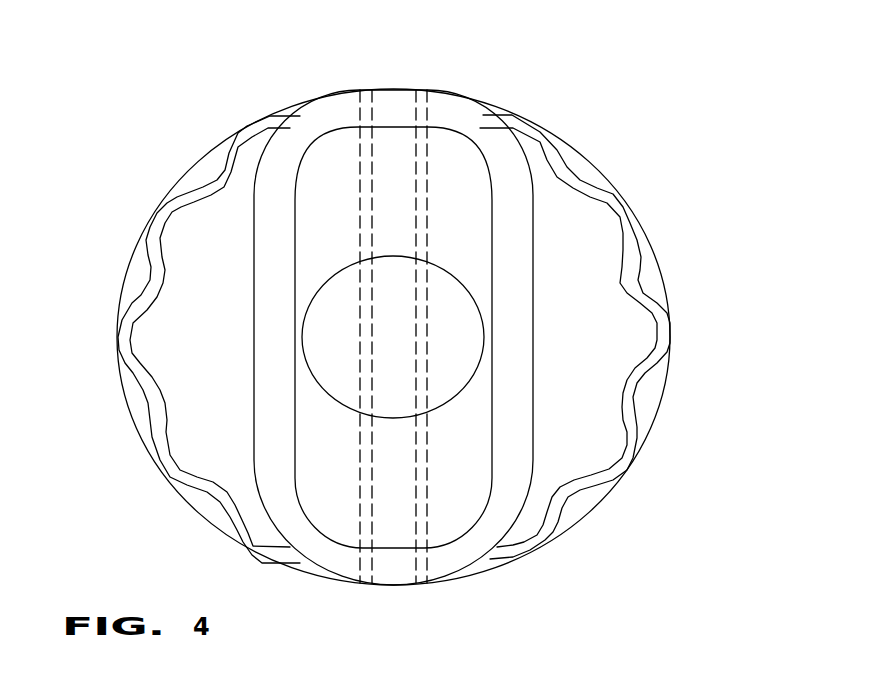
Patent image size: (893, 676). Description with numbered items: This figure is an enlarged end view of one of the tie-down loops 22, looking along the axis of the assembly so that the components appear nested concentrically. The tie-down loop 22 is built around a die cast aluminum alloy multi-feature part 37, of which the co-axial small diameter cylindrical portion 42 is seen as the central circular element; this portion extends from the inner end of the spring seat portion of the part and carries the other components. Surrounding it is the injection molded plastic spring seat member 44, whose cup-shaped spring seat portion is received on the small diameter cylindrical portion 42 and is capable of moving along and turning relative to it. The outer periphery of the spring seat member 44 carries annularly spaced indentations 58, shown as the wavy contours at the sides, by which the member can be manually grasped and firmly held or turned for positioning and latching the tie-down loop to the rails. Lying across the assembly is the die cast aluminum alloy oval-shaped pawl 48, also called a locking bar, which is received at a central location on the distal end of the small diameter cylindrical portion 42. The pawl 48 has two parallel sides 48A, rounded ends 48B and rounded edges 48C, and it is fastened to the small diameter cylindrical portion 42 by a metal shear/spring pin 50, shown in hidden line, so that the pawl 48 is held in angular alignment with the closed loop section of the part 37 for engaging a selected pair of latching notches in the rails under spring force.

The tie-down loop 22 is at (508, 103).
The multi-feature part 37 is at (525, 337).
The small diameter cylindrical portion 42 is at (455, 353).
The spring seat member 44 is at (592, 218).
The pawl 48 is at (409, 342).
The parallel sides 48A is at (535, 290).
The rounded ends 48B is at (303, 120).
The rounded edges 48C is at (515, 240).
The shear/spring pin 50 is at (432, 150).
The indentations 58 is at (150, 280).